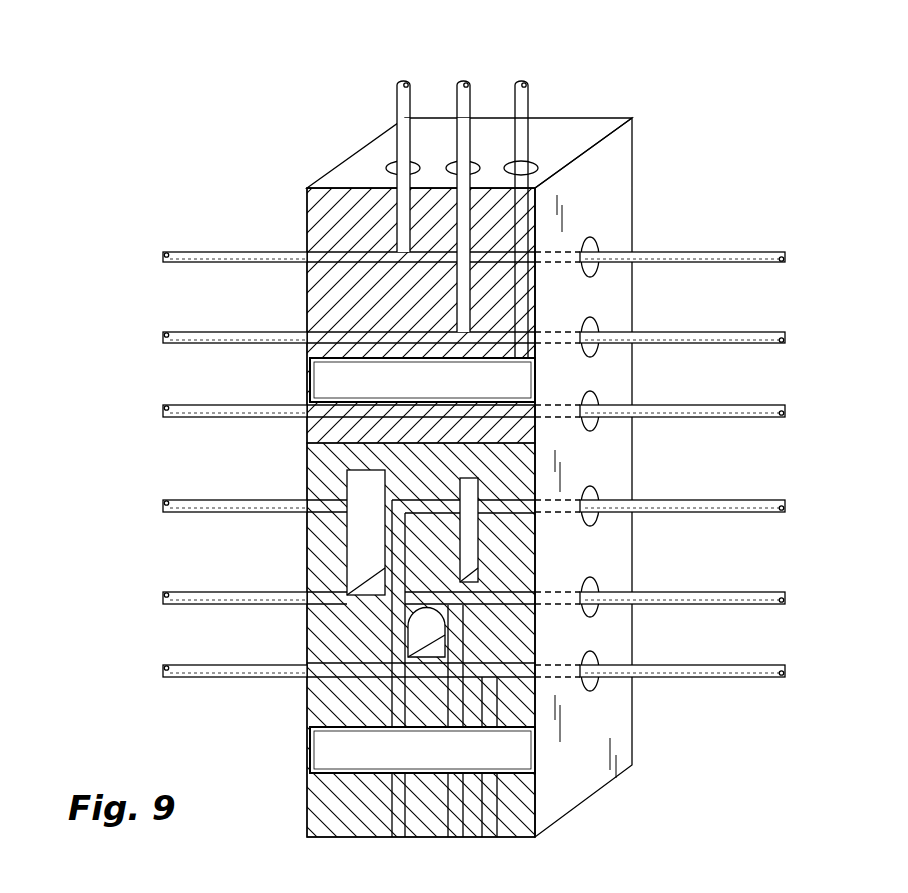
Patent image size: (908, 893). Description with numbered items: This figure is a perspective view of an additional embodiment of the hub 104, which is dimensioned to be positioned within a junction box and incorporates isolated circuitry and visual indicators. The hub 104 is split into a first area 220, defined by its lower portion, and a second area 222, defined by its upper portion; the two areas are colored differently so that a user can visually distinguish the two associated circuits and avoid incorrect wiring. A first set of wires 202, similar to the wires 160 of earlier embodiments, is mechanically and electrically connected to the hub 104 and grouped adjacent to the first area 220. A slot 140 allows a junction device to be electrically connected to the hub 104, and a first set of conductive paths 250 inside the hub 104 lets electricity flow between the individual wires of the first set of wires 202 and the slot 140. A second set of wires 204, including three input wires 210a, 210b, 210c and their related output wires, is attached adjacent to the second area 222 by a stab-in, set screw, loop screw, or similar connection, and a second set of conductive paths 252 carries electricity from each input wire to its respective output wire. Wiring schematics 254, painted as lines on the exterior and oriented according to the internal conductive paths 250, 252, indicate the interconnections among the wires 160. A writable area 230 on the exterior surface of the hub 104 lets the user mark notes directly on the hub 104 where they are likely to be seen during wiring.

The hub 104 is at (537, 451).
The second set of wires 204 is at (468, 219).
The first set of wires 202 is at (469, 576).
The input wire 210a is at (467, 396).
The input wire 210b is at (232, 330).
The input wire 210c is at (232, 250).
The wires 160 is at (474, 573).
The second area 222 is at (328, 197).
The first area 220 is at (321, 707).
The wiring schematics 254 is at (335, 250).
The writable area 230 is at (318, 372).
The second set of conductive paths 252 is at (563, 252).
The first set of conductive paths 250 is at (563, 500).
The slot 140 is at (358, 538).